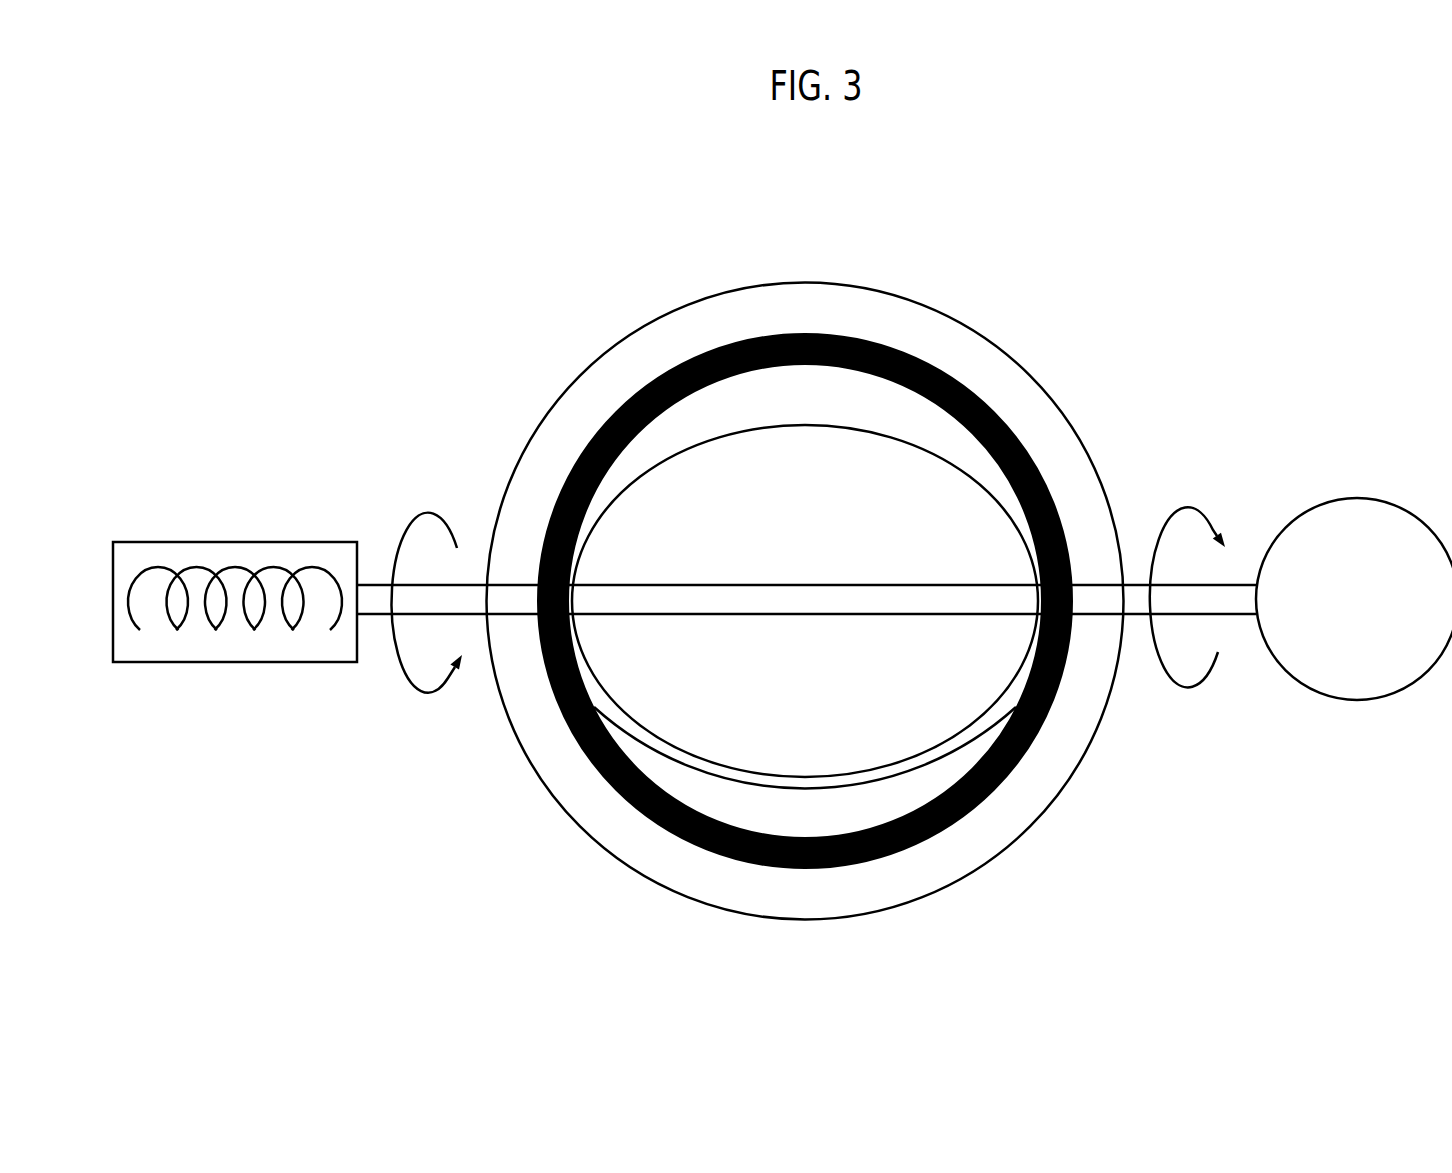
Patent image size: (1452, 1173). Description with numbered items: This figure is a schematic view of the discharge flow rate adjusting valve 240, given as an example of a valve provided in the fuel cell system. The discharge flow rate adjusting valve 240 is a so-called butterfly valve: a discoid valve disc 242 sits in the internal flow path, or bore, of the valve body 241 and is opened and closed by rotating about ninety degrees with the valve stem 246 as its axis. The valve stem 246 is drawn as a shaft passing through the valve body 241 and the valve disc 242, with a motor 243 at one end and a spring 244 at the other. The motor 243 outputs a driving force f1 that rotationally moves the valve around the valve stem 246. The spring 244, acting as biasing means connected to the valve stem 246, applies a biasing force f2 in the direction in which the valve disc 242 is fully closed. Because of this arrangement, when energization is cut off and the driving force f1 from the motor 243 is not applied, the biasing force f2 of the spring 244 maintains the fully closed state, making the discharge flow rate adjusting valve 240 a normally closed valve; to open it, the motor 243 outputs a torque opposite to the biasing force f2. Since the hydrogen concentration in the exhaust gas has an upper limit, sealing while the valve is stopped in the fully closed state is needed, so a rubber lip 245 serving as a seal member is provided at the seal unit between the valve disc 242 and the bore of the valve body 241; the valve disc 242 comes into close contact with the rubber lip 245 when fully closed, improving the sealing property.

The discharge flow rate adjusting valve 240 is at (1033, 204).
The valve body 241 is at (1003, 358).
The valve disc 242 is at (888, 713).
The motor 243 is at (1355, 497).
The spring 244 is at (232, 542).
The rubber lip 245 is at (698, 828).
The valve stem 246 is at (805, 585).
The driving force f1 is at (1189, 510).
The biasing force f2 is at (428, 512).